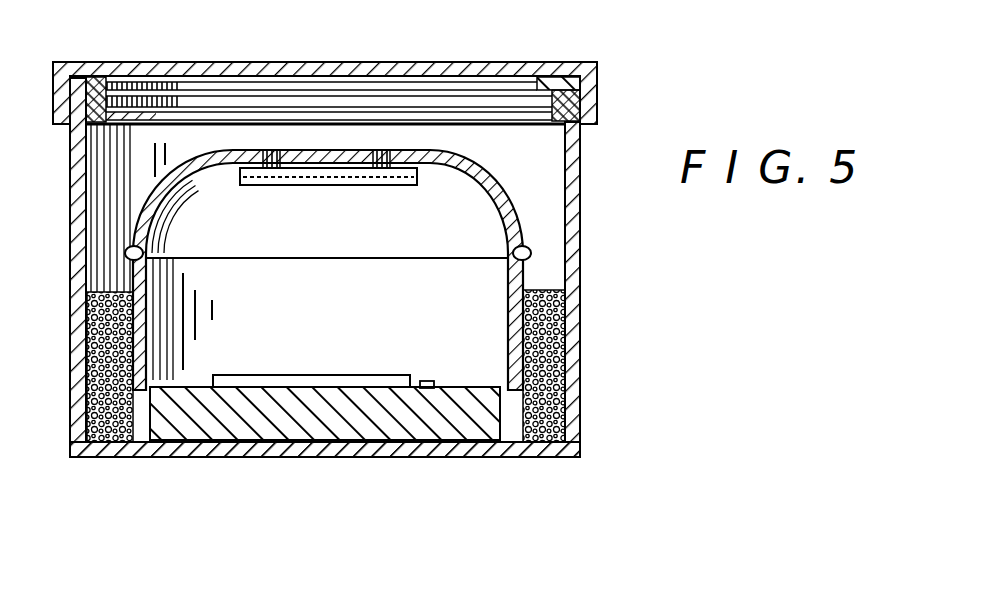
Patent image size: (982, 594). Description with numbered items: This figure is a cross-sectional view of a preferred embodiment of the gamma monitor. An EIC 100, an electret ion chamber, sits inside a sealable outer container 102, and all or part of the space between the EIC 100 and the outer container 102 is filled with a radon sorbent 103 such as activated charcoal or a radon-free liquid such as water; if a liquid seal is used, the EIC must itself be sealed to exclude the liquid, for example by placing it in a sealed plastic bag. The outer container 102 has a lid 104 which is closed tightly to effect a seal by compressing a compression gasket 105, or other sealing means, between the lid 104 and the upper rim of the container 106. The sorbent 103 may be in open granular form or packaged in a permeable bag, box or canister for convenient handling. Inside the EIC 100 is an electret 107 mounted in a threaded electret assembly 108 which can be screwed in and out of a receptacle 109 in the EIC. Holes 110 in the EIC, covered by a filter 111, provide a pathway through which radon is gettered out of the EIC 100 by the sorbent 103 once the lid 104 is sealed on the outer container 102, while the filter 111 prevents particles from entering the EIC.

The EIC 100 is at (507, 203).
The outer container 102 is at (583, 298).
The radon sorbent 103 is at (568, 378).
The lid 104 is at (502, 61).
The compression gasket 105 is at (597, 76).
The upper rim of the container 106 is at (597, 106).
The electret 107 is at (357, 372).
The threaded electret assembly 108 is at (428, 380).
The receptacle 109 is at (268, 458).
The holes 110 is at (386, 149).
The filter 111 is at (290, 186).